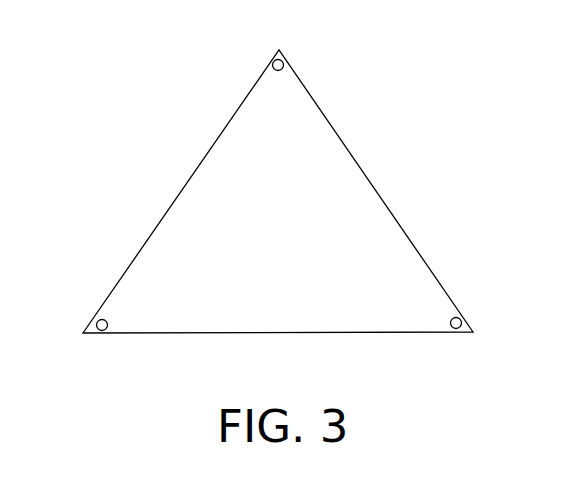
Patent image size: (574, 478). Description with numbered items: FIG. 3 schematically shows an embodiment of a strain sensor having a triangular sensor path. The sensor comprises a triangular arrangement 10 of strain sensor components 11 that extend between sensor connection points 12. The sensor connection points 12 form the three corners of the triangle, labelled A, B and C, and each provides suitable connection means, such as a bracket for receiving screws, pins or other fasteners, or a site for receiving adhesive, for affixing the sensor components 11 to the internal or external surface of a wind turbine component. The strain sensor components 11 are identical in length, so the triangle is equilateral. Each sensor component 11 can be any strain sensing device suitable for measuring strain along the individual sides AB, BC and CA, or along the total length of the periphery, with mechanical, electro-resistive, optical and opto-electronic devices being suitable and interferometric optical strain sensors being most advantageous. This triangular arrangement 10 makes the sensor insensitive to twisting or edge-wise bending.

The triangular arrangement 10 is at (277, 196).
The strain sensor component 11 is at (196, 170).
The sensor connection point 12 is at (285, 60).